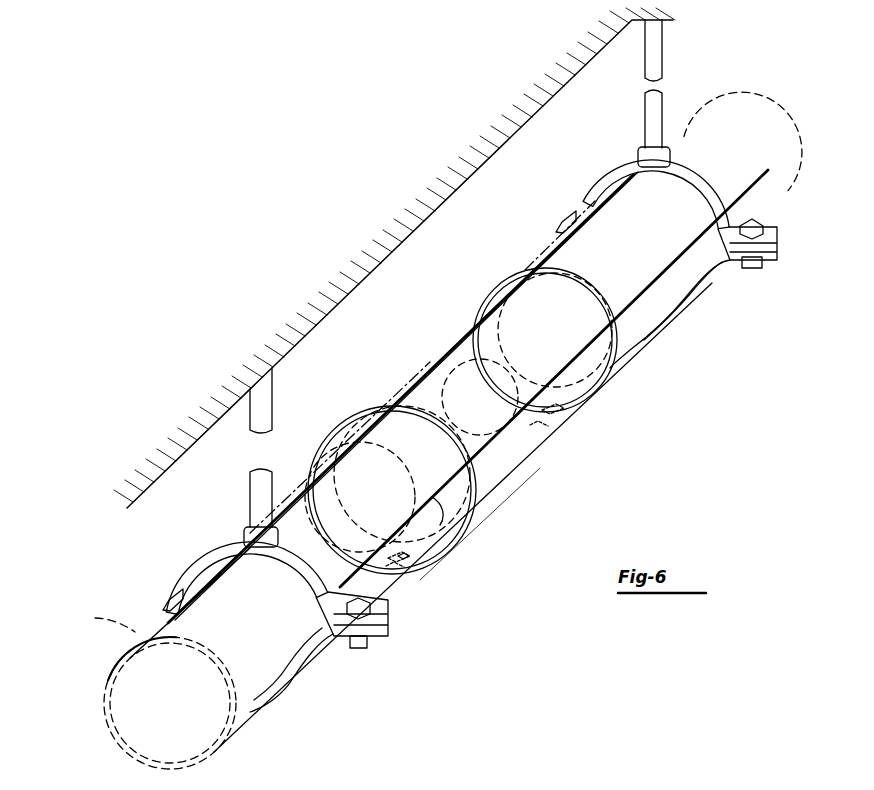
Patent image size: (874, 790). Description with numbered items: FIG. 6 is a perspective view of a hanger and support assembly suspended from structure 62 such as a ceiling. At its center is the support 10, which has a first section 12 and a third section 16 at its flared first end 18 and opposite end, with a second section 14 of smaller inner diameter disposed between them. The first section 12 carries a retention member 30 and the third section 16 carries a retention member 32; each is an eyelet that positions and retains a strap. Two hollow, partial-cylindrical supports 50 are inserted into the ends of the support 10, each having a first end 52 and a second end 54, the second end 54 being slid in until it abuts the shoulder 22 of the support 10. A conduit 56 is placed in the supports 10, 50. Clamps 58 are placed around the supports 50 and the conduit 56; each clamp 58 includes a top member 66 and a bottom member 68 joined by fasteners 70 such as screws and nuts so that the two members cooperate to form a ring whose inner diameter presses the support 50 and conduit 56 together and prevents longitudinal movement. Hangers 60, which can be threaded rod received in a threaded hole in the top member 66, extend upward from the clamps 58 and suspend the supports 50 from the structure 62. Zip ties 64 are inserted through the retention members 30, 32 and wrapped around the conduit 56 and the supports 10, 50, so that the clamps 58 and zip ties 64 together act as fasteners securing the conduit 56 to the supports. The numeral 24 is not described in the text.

The support 10 is at (543, 447).
The first section 12 is at (318, 473).
The second section 14 is at (420, 380).
The third section 16 is at (455, 345).
The first end 18 is at (440, 523).
The shoulder 22 is at (480, 470).
The second tab 24 is at (555, 415).
The retention member 30 is at (393, 562).
The retention member 32 is at (534, 428).
The support 50 is at (417, 577).
The first end 52 is at (184, 690).
The second end 54 is at (456, 548).
The conduit 56 is at (126, 628).
The clamp 58 is at (220, 543).
The hanger 60 is at (252, 478).
The structure 62 is at (457, 189).
The zip tie 64 is at (447, 422).
The top member 66 is at (245, 545).
The bottom member 68 is at (330, 648).
The fastener 70 is at (340, 607).